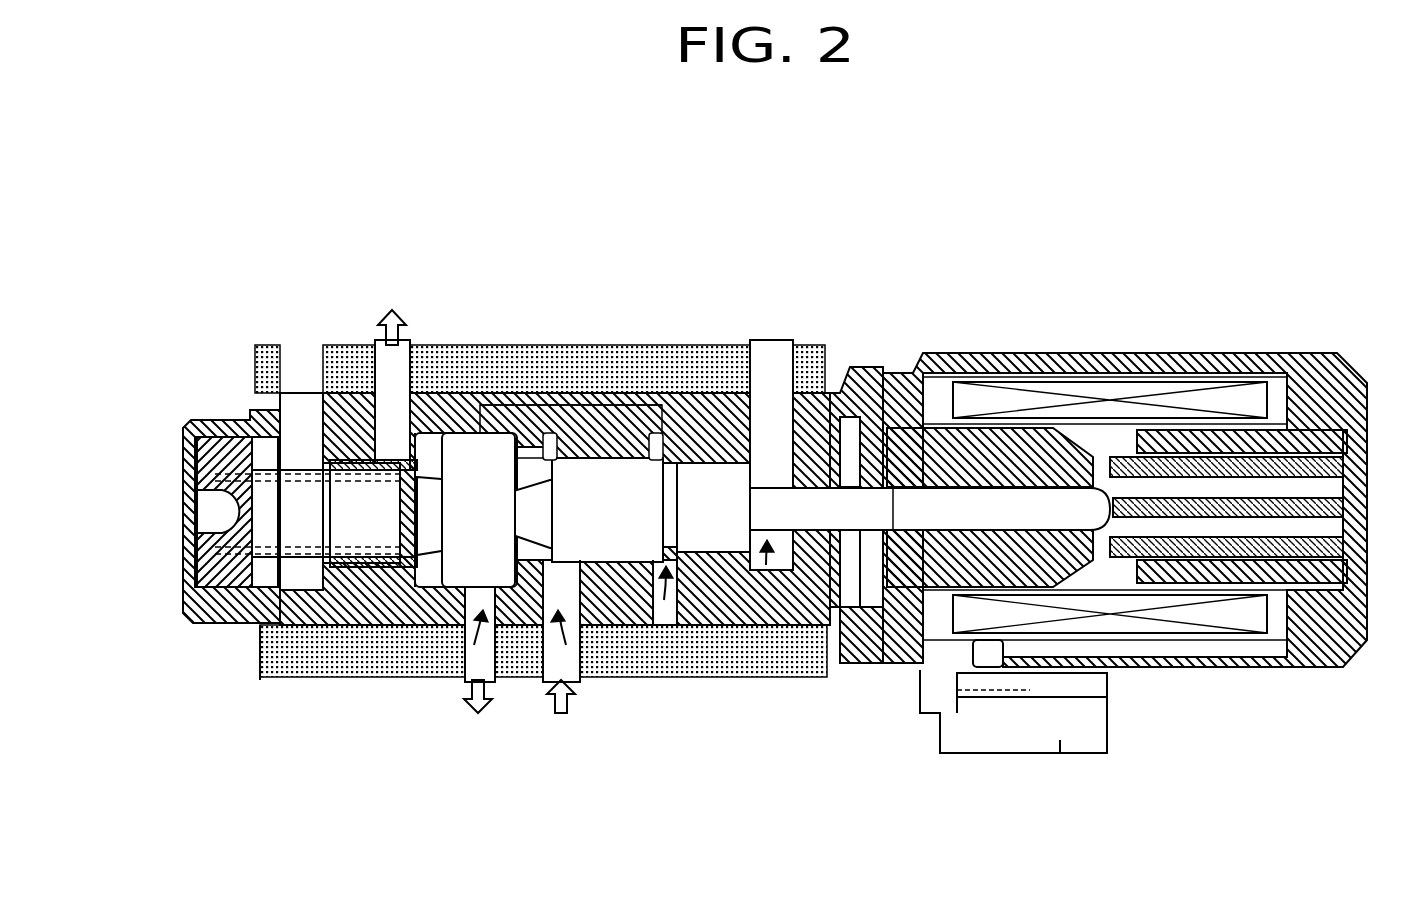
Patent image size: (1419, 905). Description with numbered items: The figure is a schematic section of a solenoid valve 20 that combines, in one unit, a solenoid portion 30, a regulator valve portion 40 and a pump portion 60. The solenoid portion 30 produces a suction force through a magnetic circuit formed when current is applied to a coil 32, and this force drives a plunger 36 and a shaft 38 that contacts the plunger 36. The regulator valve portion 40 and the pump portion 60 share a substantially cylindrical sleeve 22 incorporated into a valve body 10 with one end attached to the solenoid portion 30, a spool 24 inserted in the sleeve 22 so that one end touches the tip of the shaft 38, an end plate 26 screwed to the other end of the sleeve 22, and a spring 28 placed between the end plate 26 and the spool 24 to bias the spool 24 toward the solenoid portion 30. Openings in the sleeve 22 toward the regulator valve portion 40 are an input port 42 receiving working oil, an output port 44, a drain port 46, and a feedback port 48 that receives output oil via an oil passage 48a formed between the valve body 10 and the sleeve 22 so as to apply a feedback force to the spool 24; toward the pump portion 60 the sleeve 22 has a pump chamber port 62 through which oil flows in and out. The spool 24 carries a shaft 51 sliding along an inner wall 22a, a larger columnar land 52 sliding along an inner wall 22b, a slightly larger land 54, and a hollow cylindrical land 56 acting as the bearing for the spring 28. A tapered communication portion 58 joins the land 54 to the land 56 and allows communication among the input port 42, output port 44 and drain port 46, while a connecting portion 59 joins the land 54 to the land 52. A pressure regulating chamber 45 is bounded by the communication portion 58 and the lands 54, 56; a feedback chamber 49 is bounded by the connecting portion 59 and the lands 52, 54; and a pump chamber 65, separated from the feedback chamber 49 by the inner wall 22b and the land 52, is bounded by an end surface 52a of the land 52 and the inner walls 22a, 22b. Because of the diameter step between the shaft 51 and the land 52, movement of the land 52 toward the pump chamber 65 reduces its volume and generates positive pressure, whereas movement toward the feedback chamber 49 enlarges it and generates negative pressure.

The valve body 10 is at (260, 650).
The solenoid valve 20 is at (1058, 176).
The sleeve 22 is at (830, 391).
The inner wall 22a is at (818, 542).
The inner wall 22b is at (757, 578).
The spool 24 is at (603, 458).
The end plate 26 is at (225, 506).
The spring 28 is at (270, 470).
The solenoid portion 30 is at (1058, 532).
The coil 32 is at (1213, 403).
The plunger 36 is at (1150, 457).
The shaft 38 is at (1053, 497).
The regulator valve portion 40 is at (243, 733).
The input port 42 is at (572, 635).
The output port 44 is at (472, 635).
The pressure regulating chamber 45 is at (498, 583).
The drain port 46 is at (392, 395).
The feedback port 48 is at (667, 490).
The oil passage 48a is at (600, 402).
The feedback chamber 49 is at (676, 628).
The shaft 51 is at (863, 500).
The land 52 is at (718, 566).
The end surface 52a is at (752, 480).
The land 54 is at (567, 500).
The land 56 is at (348, 462).
The communication portion 58 is at (453, 495).
The connecting portion 59 is at (684, 475).
The pump portion 60 is at (722, 733).
The pump chamber port 62 is at (777, 390).
The pump chamber 65 is at (840, 648).